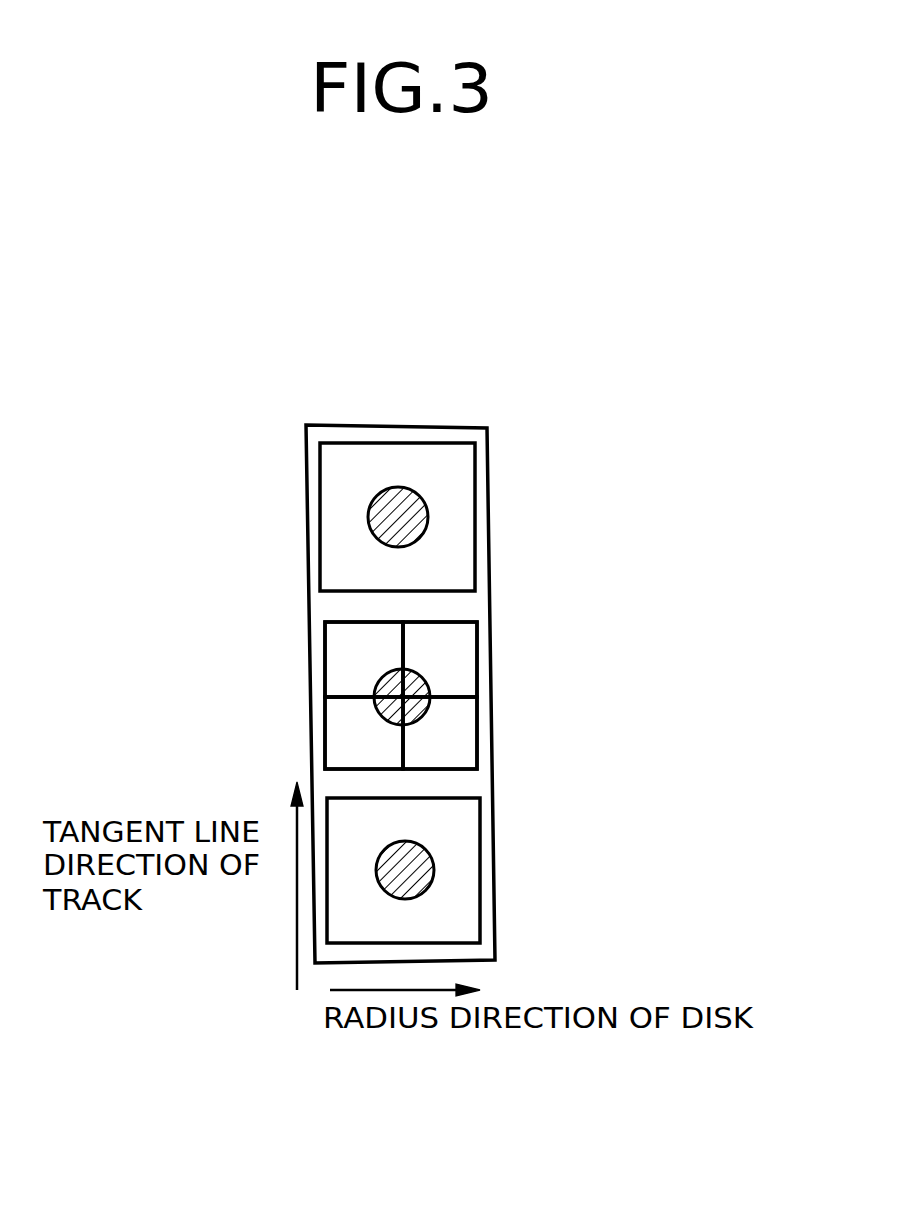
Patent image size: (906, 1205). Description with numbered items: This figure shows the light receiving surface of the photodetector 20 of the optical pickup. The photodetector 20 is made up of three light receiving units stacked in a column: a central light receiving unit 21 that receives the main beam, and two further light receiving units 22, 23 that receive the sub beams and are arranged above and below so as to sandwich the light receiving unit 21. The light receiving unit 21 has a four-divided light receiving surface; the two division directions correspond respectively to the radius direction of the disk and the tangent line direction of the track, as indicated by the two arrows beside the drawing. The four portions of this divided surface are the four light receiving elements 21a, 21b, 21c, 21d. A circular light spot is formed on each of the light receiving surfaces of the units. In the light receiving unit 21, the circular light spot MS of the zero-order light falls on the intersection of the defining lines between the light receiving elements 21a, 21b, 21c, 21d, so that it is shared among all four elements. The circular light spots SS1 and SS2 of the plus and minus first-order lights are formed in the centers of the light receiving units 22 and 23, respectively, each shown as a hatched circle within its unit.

The photodetector 20 is at (284, 456).
The light receiving unit 23 is at (475, 514).
The light receiving unit 22 is at (480, 862).
The light receiving unit 21 is at (497, 695).
The light receiving element 21a is at (325, 735).
The light receiving element 21b is at (325, 651).
The light receiving element 21c is at (477, 648).
The light receiving element 21d is at (477, 738).
The circular light spot MS is at (383, 672).
The circular light spot SS1 is at (425, 893).
The circular light spot SS2 is at (425, 500).